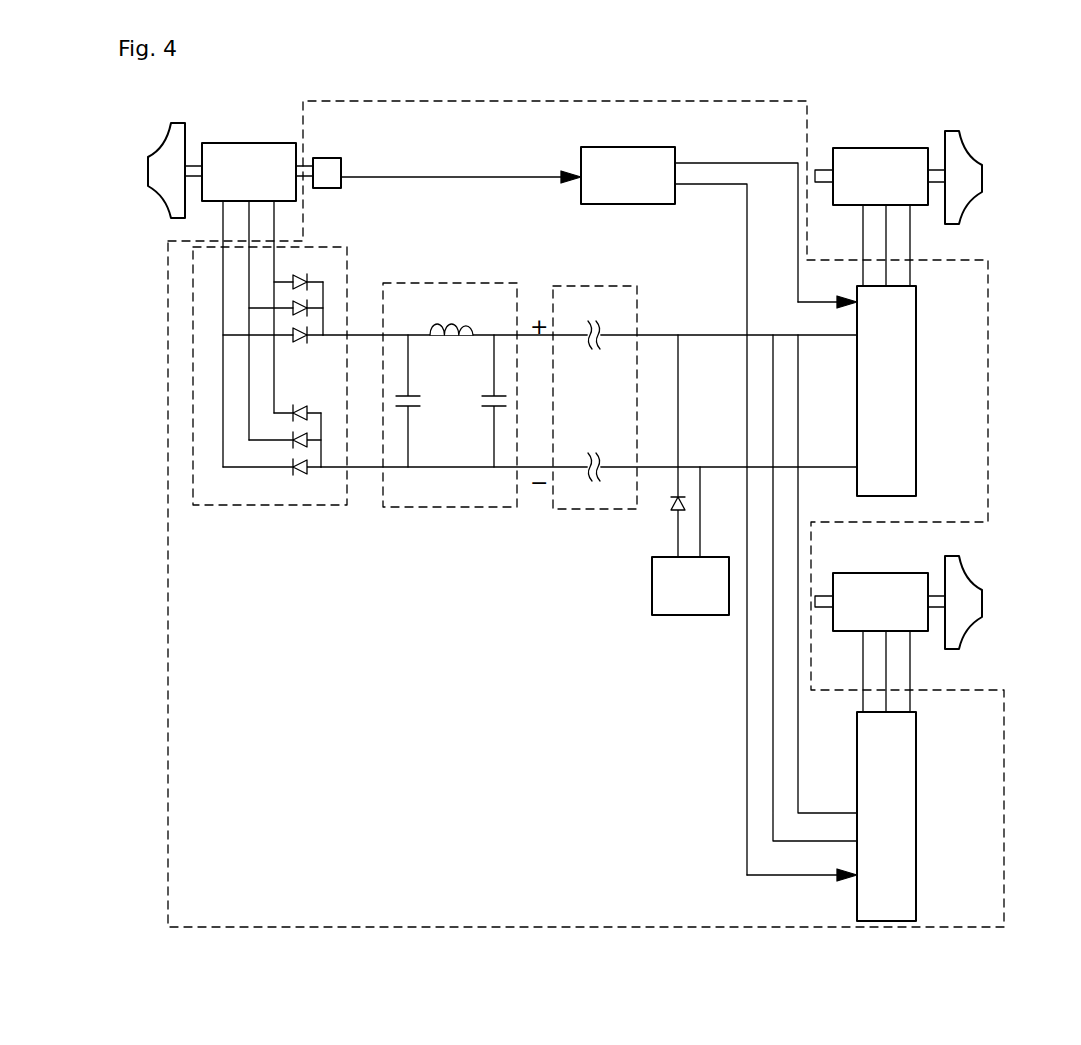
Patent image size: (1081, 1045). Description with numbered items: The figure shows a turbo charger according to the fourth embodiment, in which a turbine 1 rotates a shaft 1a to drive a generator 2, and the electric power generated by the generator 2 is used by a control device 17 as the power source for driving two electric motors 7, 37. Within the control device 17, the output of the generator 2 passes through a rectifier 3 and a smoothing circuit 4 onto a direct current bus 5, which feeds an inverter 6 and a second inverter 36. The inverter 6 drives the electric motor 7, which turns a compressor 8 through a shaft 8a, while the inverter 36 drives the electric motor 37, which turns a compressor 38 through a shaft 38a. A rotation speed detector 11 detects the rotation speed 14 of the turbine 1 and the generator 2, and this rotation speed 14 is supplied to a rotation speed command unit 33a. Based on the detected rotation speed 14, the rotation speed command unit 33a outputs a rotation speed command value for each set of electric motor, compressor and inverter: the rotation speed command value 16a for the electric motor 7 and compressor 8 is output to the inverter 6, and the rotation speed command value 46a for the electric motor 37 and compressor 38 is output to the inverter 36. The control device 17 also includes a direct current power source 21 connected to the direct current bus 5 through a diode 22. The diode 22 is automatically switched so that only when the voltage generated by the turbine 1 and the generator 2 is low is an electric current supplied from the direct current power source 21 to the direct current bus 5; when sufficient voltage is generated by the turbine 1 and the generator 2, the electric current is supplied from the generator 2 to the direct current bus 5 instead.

The turbine 1 is at (171, 160).
The shaft 1a is at (194, 180).
The generator 2 is at (252, 160).
The rectifier 3 is at (262, 507).
The smoothing circuit 4 is at (447, 508).
The direct current bus 5 is at (617, 510).
The inverter 6 is at (902, 469).
The electric motor 7 is at (870, 167).
The compressor 8 is at (964, 160).
The shaft 8a is at (937, 184).
The rotation speed detector 11 is at (331, 172).
The rotation speed 14 is at (461, 164).
The rotation speed command value 16a is at (827, 289).
The control device 17 is at (1004, 716).
The direct current power source 21 is at (697, 585).
The diode 22 is at (673, 512).
The rotation speed command unit 33a is at (659, 155).
The inverter 36 is at (908, 891).
The electric motor 37 is at (870, 590).
The compressor 38 is at (964, 588).
The shaft 38a is at (939, 610).
The rotation speed command value 46a is at (802, 890).